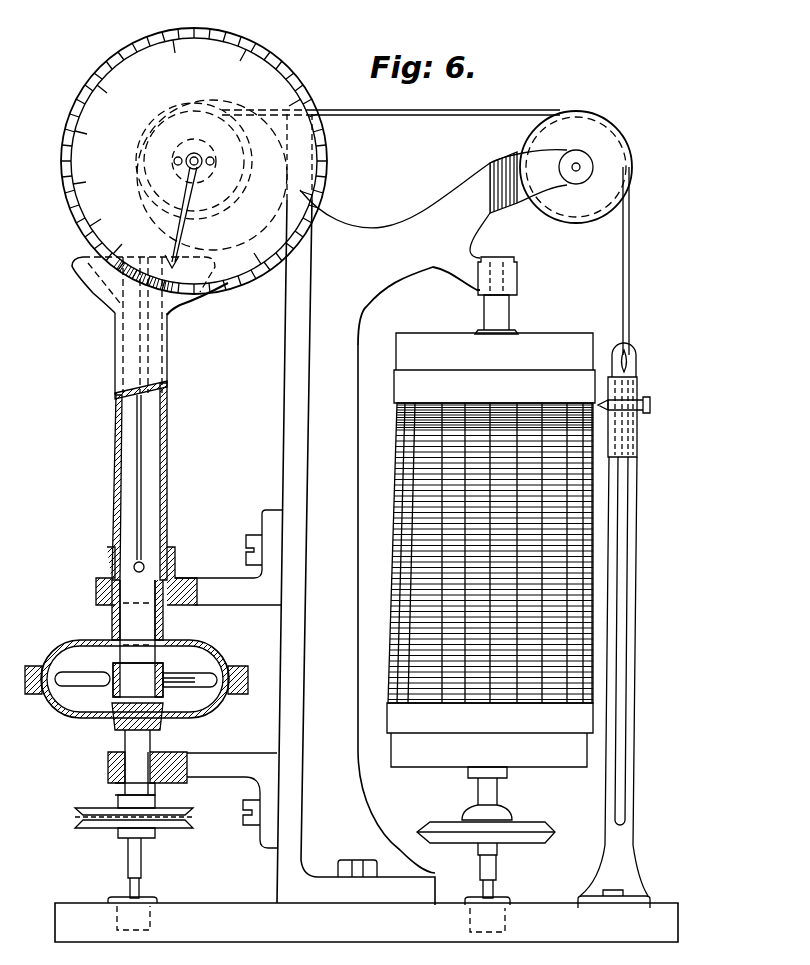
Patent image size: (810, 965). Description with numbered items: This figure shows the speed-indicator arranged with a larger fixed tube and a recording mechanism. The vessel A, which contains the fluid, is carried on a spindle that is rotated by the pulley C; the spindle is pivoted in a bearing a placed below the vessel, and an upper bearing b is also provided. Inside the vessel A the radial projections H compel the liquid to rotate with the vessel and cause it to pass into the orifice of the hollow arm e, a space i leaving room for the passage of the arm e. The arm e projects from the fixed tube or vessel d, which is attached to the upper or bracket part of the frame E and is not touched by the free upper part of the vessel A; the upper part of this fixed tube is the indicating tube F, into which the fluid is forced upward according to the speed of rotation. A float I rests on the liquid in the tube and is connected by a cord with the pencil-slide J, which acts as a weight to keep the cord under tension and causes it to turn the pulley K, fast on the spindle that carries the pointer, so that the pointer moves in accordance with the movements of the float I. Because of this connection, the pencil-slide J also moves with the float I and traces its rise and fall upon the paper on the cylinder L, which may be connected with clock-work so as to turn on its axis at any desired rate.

The pulley K is at (194, 161).
The frame E is at (367, 507).
The cylinder L is at (491, 581).
The indicating glass tube F is at (146, 476).
The float I is at (137, 621).
The vessel A is at (136, 678).
The radial projections H is at (135, 679).
The space i is at (82, 680).
The hollow arm e is at (190, 680).
The fixed tube d is at (138, 680).
The pulley C is at (142, 816).
The upper bearing b is at (133, 868).
The bearing a is at (131, 893).
The pencil-slide J is at (614, 625).